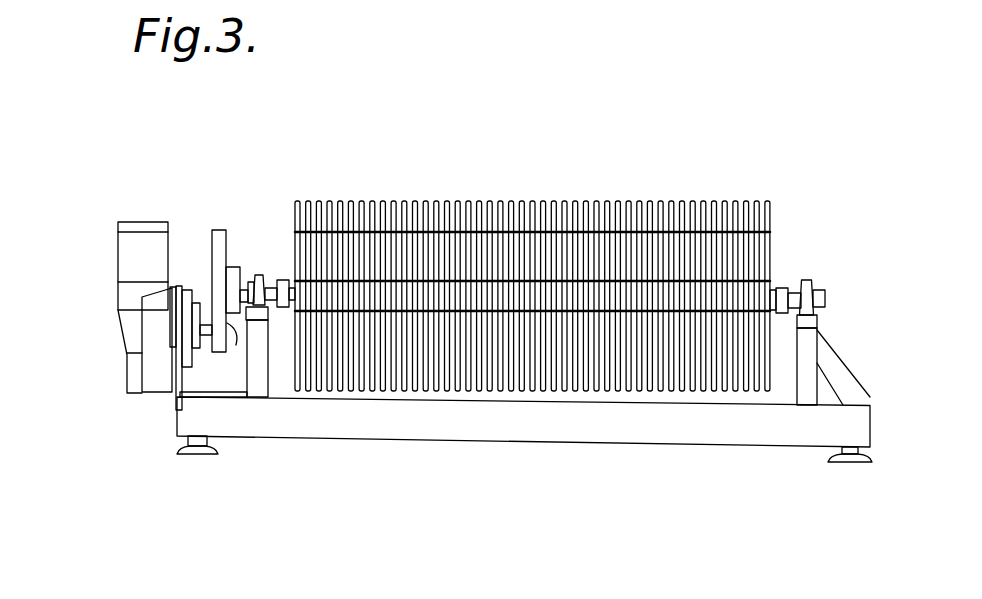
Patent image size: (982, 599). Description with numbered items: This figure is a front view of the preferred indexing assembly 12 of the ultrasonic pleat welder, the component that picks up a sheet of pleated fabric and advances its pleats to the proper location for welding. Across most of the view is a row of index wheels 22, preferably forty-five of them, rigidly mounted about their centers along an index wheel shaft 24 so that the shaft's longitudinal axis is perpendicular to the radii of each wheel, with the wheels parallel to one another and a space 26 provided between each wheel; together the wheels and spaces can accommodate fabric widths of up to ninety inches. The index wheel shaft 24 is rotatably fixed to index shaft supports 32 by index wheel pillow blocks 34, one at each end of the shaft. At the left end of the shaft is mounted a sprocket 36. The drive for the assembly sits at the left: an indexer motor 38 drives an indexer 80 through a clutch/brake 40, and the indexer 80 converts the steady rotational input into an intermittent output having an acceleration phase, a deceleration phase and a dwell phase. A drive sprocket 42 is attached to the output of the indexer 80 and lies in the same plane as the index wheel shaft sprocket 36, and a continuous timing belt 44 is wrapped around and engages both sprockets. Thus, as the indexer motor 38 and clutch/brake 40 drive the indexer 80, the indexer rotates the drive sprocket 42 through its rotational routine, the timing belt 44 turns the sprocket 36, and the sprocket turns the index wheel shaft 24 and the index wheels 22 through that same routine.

The indexing assembly 12 is at (462, 168).
The index wheels 22 is at (748, 203).
The index wheel shaft 24 is at (795, 278).
The space 26 is at (569, 200).
The index shaft supports 32 is at (260, 373).
The index wheel pillow blocks 34 is at (263, 273).
The sprocket 36 is at (233, 277).
The indexer motor 38 is at (118, 257).
The clutch/brake 40 is at (118, 292).
The drive sprocket 42 is at (237, 343).
The timing belt 44 is at (215, 230).
The indexer 80 is at (147, 330).